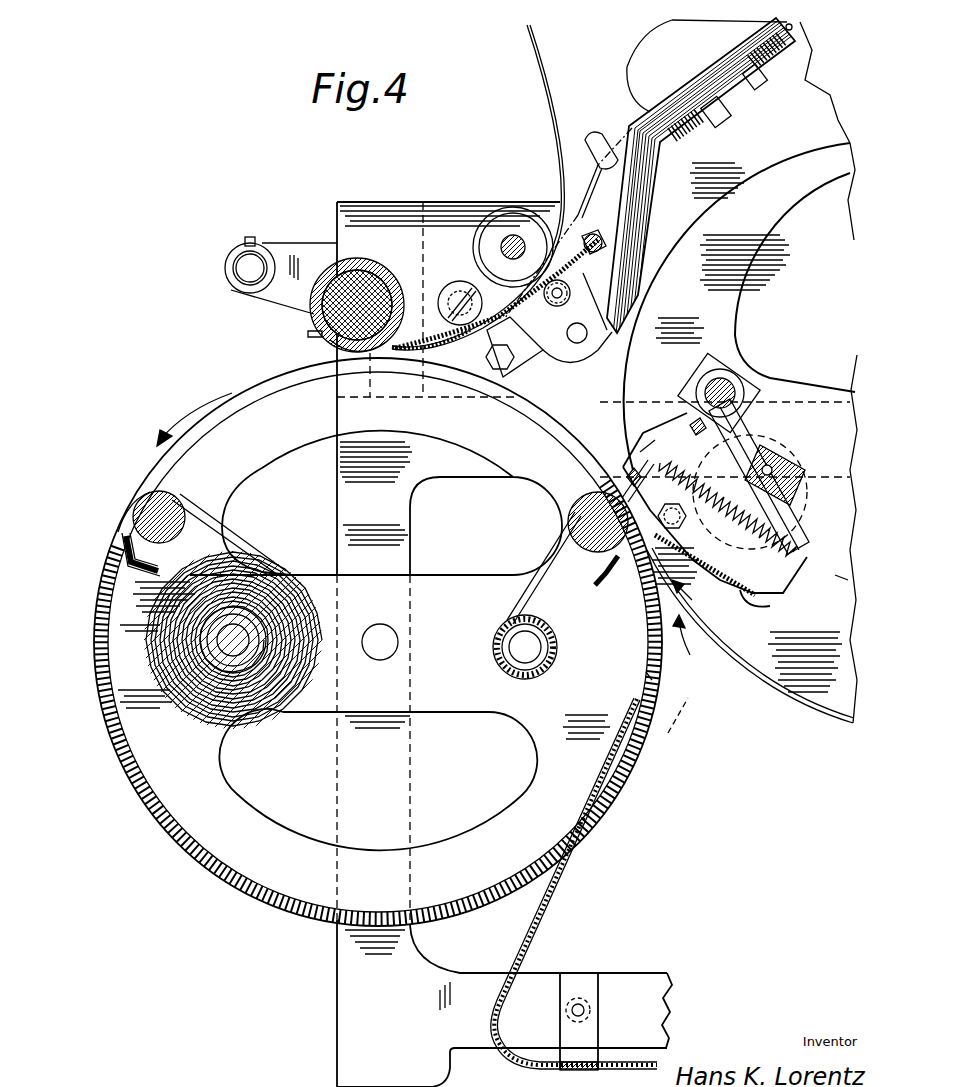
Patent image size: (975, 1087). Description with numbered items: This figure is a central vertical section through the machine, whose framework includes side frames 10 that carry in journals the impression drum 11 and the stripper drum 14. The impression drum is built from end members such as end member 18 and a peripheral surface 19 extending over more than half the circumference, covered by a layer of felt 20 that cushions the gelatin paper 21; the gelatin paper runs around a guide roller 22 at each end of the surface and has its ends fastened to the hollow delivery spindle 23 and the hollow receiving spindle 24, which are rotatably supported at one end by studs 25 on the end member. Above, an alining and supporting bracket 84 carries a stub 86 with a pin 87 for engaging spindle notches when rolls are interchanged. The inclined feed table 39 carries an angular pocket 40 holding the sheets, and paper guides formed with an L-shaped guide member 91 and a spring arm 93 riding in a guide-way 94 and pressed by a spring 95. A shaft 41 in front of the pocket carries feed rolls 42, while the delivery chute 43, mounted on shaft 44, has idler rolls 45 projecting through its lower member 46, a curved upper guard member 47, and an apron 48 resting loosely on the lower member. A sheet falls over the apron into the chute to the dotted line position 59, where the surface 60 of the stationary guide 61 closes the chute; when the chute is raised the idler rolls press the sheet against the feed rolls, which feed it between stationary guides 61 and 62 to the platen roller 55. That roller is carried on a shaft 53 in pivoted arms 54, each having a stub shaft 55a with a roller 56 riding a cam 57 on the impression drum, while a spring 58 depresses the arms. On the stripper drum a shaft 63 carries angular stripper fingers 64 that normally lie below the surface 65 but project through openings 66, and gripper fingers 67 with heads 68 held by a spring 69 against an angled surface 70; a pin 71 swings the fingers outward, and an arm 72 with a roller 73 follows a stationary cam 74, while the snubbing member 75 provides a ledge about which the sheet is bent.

The side frames 10 is at (345, 990).
The impression drum 11 is at (172, 472).
The stripper drum 14 is at (757, 212).
The end member 18 is at (458, 582).
The peripheral surface 19 is at (648, 676).
The layer of felt 20 is at (645, 640).
The gelatin paper 21 is at (662, 682).
The guide roller 22 is at (172, 498).
The hollow delivery spindle 23 is at (240, 660).
The hollow receiving spindle 24 is at (500, 665).
The studs 25 is at (228, 650).
The inclined feed table 39 is at (795, 28).
The angular pocket 40 is at (628, 310).
The shaft 41 is at (513, 237).
The feed rolls 42 is at (505, 220).
The delivery chute 43 is at (530, 356).
The shaft 44 is at (600, 242).
The idler rolls 45 is at (592, 325).
The lower member 46 is at (582, 343).
The curved upper guard member 47 is at (542, 78).
The apron 48 is at (612, 138).
The shaft 53 is at (372, 285).
The pivoted arms 54 is at (413, 262).
The platen roller 55 is at (338, 268).
The stub shaft 55a is at (387, 411).
The roller 56 is at (352, 352).
The cam 57 is at (194, 407).
The spring 58 is at (308, 333).
The dotted line position 59 is at (660, 102).
The surface 60 is at (520, 382).
The stationary guide 61 is at (468, 370).
The stationary guide 62 is at (457, 293).
The shaft 63 is at (735, 378).
The angular stripper fingers 64 is at (790, 618).
The surface 65 is at (775, 690).
The openings 66 is at (693, 617).
The gripper fingers 67 is at (650, 450).
The heads 68 is at (630, 470).
The spring 69 is at (790, 530).
The surface 70 is at (727, 509).
The pin 71 is at (718, 412).
The arm 72 is at (800, 440).
The roller 73 is at (800, 455).
The stationary cam 74 is at (842, 580).
The snubbing member 75 is at (575, 515).
The alining and supporting bracket 84 is at (240, 294).
The stub 86 is at (232, 262).
The pin 87 is at (250, 237).
The L-shaped guide member 91 is at (690, 22).
The spring arm 93 is at (718, 75).
The guide-way 94 is at (758, 82).
The spring 95 is at (730, 108).